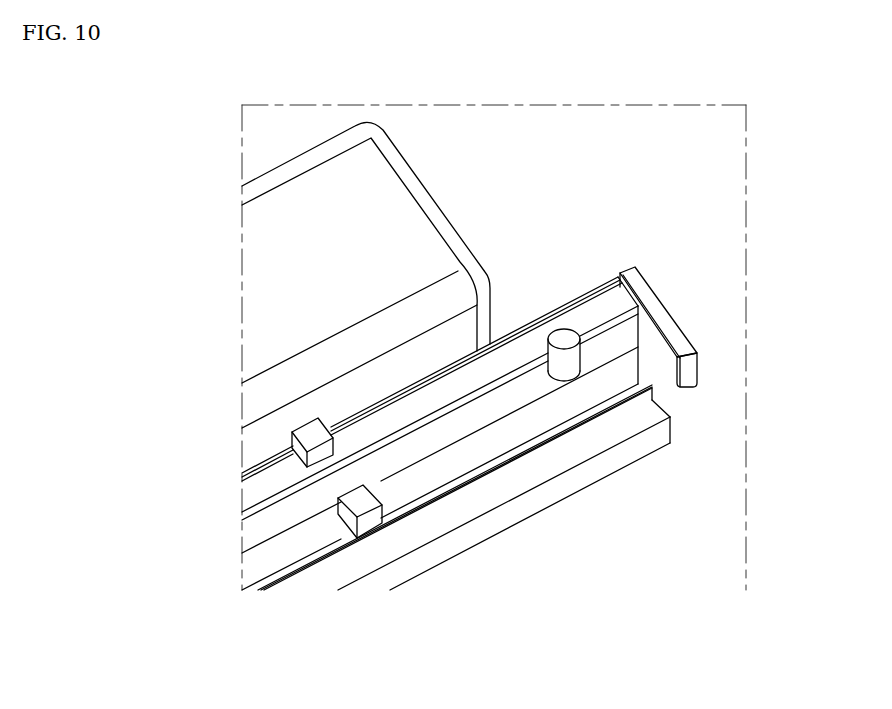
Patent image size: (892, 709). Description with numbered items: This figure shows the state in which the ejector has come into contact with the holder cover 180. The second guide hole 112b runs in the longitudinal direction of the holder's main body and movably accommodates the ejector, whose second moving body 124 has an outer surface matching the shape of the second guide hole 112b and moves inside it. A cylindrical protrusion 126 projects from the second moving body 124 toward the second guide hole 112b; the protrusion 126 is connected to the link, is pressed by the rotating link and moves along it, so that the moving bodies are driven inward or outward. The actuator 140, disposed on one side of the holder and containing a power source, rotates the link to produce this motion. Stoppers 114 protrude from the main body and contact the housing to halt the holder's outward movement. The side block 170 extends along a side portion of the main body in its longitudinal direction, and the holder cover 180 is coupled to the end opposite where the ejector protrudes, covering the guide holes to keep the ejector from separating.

The actuator 140 is at (277, 272).
The second guide hole 112b is at (416, 446).
The stopper 114 is at (302, 433).
The second moving body 124 is at (635, 330).
The protrusion 126 is at (581, 355).
The side block 170 is at (578, 477).
The holder cover 180 is at (686, 342).